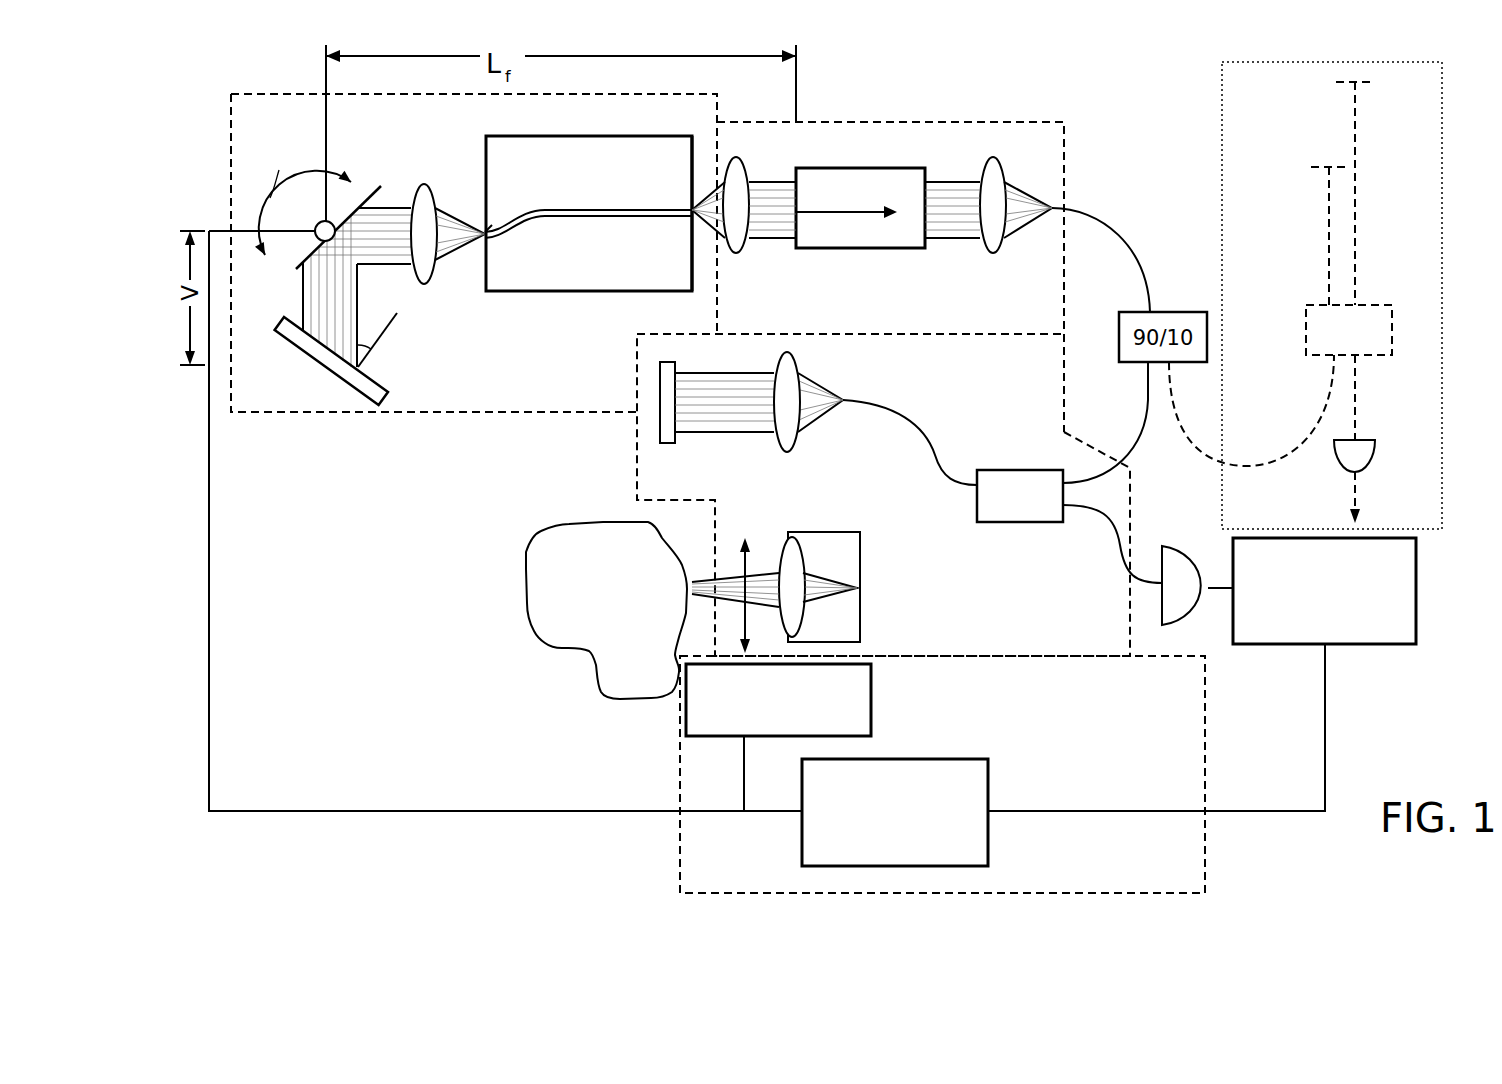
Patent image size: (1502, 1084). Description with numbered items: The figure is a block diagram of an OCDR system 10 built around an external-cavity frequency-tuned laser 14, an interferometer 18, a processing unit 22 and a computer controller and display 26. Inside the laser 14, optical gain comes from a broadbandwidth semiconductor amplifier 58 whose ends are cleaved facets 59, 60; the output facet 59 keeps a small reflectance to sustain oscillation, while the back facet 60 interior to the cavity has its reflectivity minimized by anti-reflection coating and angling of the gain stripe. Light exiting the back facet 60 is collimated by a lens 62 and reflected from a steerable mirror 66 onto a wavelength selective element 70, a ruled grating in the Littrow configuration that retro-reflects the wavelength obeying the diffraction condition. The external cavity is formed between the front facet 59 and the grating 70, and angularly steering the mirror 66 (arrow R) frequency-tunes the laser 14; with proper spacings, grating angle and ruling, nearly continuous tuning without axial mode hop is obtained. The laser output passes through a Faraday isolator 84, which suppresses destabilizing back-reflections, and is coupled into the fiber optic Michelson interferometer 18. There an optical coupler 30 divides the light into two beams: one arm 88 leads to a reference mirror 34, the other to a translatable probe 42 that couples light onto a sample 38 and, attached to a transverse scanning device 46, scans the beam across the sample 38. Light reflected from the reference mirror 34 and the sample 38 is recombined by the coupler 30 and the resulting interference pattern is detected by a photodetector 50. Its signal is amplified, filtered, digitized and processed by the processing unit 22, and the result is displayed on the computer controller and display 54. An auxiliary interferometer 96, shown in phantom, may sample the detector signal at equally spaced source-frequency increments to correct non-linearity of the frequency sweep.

The OCDR system 10 is at (1110, 66).
The external-cavity frequency-tuned laser 14 is at (540, 360).
The interferometer 18 is at (971, 635).
The processing unit 22 is at (1365, 645).
The computer controller and display 26 is at (1069, 760).
The optical coupler 30 is at (1010, 523).
The reference mirror 34 is at (670, 445).
The sample 38 is at (596, 680).
The translatable probe 42 is at (826, 533).
The transverse scanning device 46 is at (871, 690).
The photodetector 50 is at (1175, 624).
The computer controller and display 54 is at (988, 839).
The broadbandwidth semiconductor amplifier 58 is at (568, 190).
The output facet 59 is at (693, 144).
The back facet 60 is at (486, 255).
The lens 62 is at (430, 190).
The steerable mirror 66 is at (380, 188).
The wavelength selective element 70 is at (374, 378).
The Faraday isolator 84 is at (838, 168).
The arm of the interferometer 88 is at (942, 427).
The auxiliary interferometer 96 is at (1399, 110).